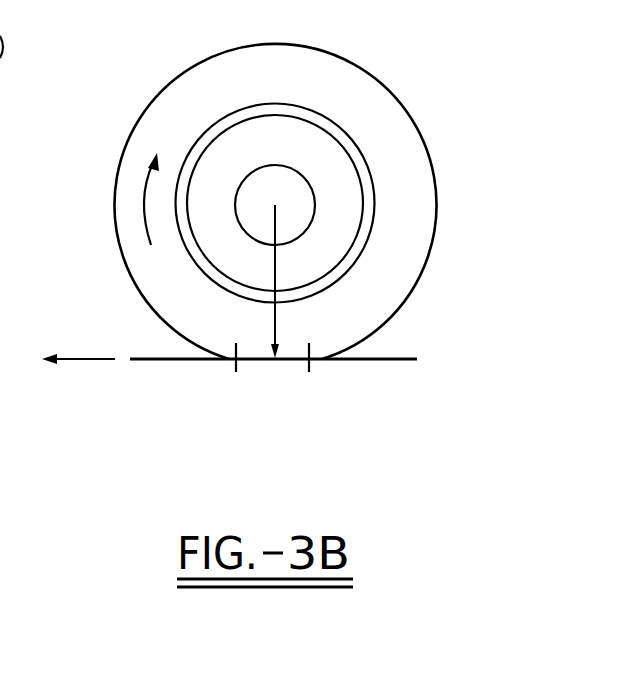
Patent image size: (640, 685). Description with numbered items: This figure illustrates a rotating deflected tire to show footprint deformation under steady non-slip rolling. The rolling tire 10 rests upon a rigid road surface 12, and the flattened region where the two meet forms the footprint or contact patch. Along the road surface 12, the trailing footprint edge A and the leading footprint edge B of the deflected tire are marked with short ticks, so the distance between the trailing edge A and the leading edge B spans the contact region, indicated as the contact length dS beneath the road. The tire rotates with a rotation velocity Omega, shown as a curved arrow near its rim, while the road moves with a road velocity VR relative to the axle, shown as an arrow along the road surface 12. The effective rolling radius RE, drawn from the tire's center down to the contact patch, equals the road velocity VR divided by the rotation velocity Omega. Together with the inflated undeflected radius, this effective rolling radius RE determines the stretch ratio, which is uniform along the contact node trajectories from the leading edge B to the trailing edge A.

The rolling tire 10 is at (172, 78).
The road surface 12 is at (393, 359).
The effective rolling radius RE is at (289, 281).
The trailing footprint edge A is at (239, 374).
The leading footprint edge B is at (311, 374).
The contact patch length dS* dS is at (274, 424).
The tire rotation velocity Omega is at (147, 191).
The road velocity VR is at (59, 367).